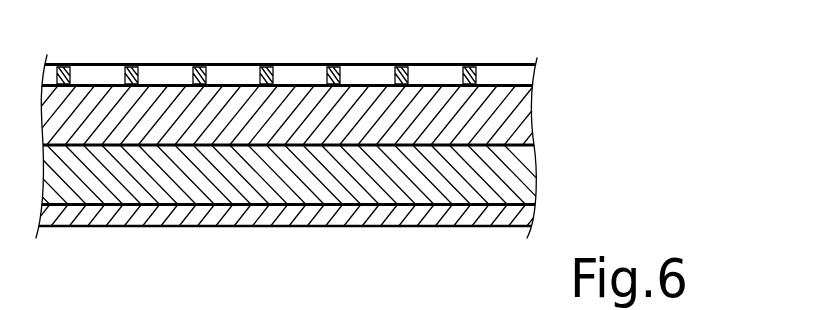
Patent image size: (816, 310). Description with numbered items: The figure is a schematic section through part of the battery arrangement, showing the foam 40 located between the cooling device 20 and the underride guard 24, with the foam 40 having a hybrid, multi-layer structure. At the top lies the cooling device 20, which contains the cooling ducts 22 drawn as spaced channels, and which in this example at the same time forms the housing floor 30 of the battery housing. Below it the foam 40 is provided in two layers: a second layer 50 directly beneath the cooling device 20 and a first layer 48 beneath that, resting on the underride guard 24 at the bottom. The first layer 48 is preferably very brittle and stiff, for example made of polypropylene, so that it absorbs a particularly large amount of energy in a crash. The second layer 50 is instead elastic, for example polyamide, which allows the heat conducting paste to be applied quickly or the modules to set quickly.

The cooling device 20 is at (340, 157).
The housing floor 30 is at (448, 63).
The cooling ducts 22 is at (283, 75).
The underride guard 24 is at (325, 213).
The foam 40 is at (340, 145).
The first layer 48 is at (520, 176).
The second layer 50 is at (520, 117).